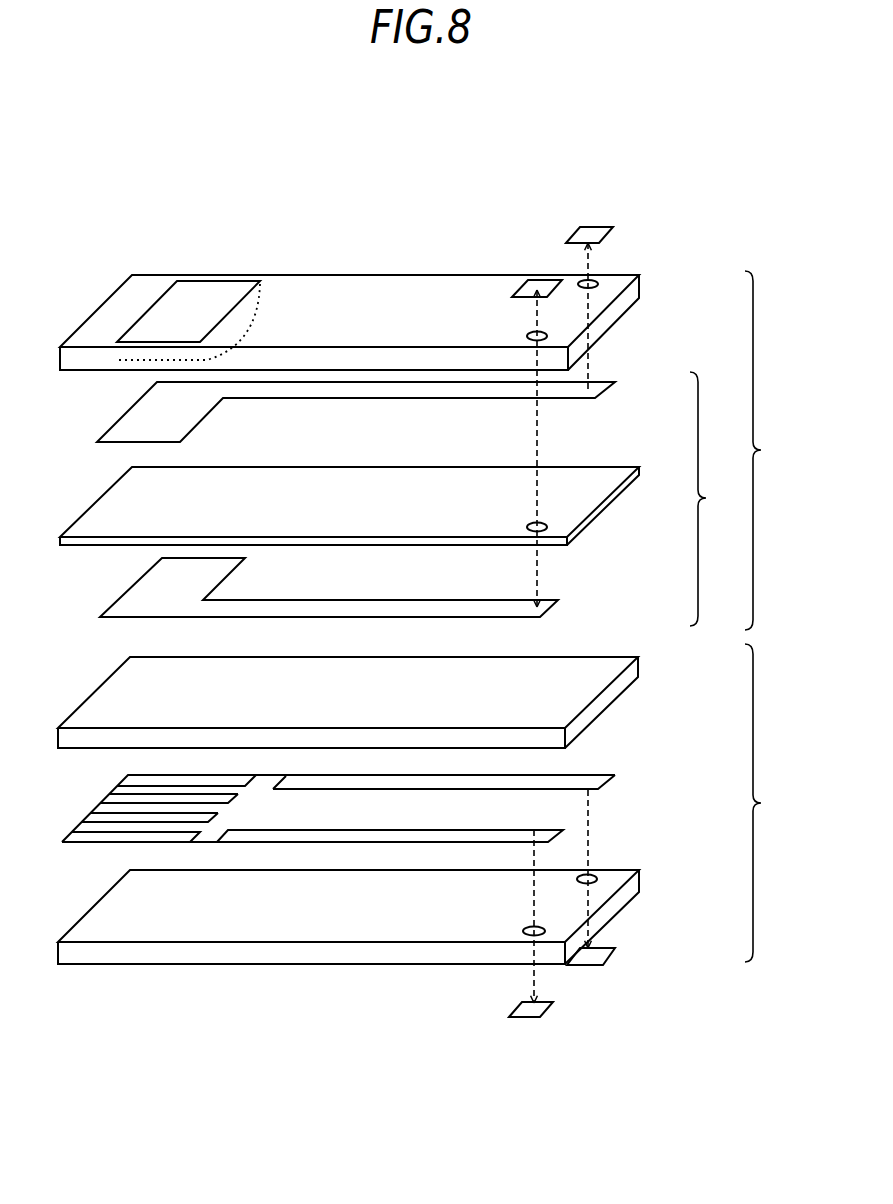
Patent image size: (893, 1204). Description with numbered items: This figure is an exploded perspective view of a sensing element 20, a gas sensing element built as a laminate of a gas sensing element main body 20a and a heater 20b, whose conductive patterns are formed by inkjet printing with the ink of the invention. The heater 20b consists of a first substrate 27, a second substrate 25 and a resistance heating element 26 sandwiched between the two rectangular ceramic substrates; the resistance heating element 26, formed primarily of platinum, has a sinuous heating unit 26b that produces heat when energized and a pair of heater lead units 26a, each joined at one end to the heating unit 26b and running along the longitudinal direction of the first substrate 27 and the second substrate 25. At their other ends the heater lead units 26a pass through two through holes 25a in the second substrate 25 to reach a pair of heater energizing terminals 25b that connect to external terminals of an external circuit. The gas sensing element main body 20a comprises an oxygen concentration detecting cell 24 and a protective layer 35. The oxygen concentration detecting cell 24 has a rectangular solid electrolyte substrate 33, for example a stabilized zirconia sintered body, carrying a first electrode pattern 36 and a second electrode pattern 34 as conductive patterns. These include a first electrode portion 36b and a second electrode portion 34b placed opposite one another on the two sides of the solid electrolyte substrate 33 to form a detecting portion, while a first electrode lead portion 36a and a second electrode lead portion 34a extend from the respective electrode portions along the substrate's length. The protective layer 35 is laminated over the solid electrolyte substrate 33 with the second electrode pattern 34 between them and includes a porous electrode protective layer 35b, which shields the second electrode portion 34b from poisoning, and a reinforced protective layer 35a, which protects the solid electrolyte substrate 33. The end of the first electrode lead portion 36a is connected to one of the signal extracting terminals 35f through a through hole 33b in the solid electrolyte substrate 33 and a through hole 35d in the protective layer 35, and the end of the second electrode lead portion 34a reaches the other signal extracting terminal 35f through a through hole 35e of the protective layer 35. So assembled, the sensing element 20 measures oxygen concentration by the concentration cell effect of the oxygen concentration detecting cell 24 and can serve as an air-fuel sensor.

The sensing element 20 is at (693, 272).
The gas sensing element main body 20a is at (774, 450).
The heater 20b is at (775, 803).
The oxygen concentration detecting cell 24 is at (713, 499).
The second substrate 25 is at (370, 903).
The through holes 25a is at (550, 914).
The heater energizing terminals 25b is at (553, 1005).
The resistance heating element 26 is at (350, 808).
The heater lead units 26a is at (400, 828).
The heating unit 26b is at (92, 801).
The first substrate 27 is at (615, 720).
The solid electrolyte substrate 33 is at (364, 507).
The through hole 33b is at (527, 527).
The second electrode pattern 34 is at (333, 416).
The second electrode lead portion 34a is at (368, 400).
The second electrode portion 34b is at (142, 400).
The protective layer 35 is at (365, 417).
The reinforced protective layer 35a is at (358, 274).
The porous electrode protective layer 35b is at (199, 285).
The through hole 35d is at (527, 336).
The through hole 35e is at (598, 280).
The signal extracting terminals 35f is at (580, 227).
The first electrode pattern 36 is at (315, 587).
The first electrode lead portion 36a is at (343, 599).
The first electrode portion 36b is at (148, 572).